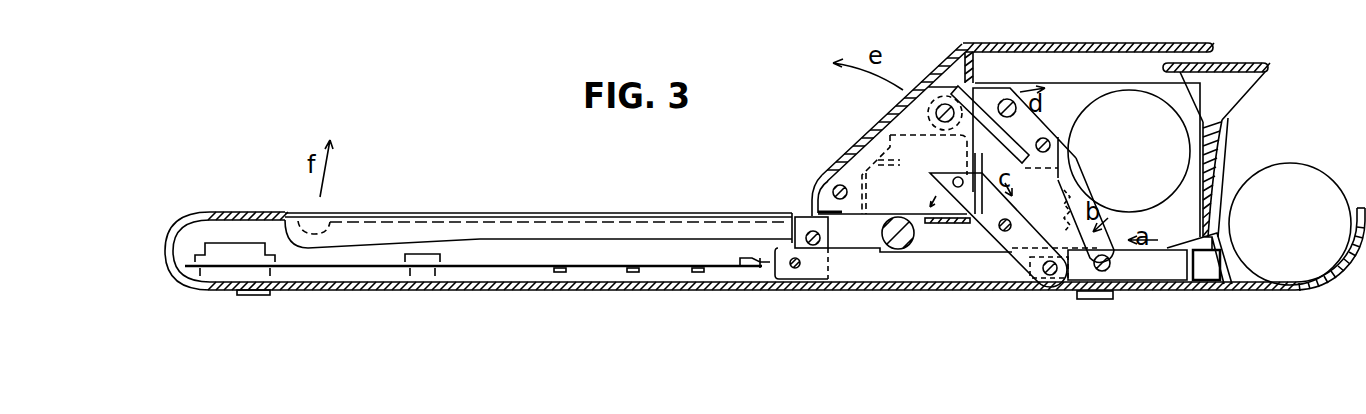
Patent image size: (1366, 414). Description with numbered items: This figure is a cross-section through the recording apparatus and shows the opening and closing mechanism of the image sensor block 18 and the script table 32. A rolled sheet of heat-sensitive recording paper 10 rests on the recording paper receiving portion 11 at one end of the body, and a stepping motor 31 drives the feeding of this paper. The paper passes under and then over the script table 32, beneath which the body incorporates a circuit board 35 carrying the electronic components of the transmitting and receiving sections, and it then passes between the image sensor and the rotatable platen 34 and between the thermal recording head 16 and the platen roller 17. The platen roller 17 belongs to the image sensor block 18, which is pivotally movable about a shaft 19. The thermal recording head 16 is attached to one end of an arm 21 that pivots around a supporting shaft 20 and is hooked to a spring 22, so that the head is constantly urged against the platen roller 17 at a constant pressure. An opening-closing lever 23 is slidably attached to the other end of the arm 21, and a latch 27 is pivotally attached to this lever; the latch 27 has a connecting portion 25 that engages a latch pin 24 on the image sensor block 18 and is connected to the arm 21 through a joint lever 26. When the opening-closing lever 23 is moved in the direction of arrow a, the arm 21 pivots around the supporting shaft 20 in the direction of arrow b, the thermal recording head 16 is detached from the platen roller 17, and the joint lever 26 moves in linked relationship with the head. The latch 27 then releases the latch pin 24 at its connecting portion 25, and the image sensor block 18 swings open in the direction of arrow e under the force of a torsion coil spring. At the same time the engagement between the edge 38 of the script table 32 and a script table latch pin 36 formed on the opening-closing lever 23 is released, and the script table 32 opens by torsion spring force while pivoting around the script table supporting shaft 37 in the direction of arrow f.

The heat-sensitive recording paper 10 is at (1307, 175).
The recording paper receiving portion 11 is at (1327, 280).
The thermal recording head 16 is at (977, 108).
The platen roller 17 is at (940, 105).
The image sensor block 18 is at (905, 85).
The shaft 19 is at (825, 182).
The supporting shaft 20 is at (1046, 138).
The arm 21 is at (1097, 258).
The spring 22 is at (1076, 130).
The opening-closing lever 23 is at (978, 272).
The latch pin 24 is at (958, 176).
The connecting portion 25 is at (945, 186).
The joint lever 26 is at (1038, 278).
The latch 27 is at (985, 233).
The stepping motor 31 is at (1177, 147).
The script table 32 is at (508, 207).
The rotatable platen 34 is at (882, 233).
The circuit board 35 is at (538, 270).
The script table latch pin 36 is at (795, 269).
The script table supporting shaft 37 is at (811, 230).
The edge 38 is at (790, 242).